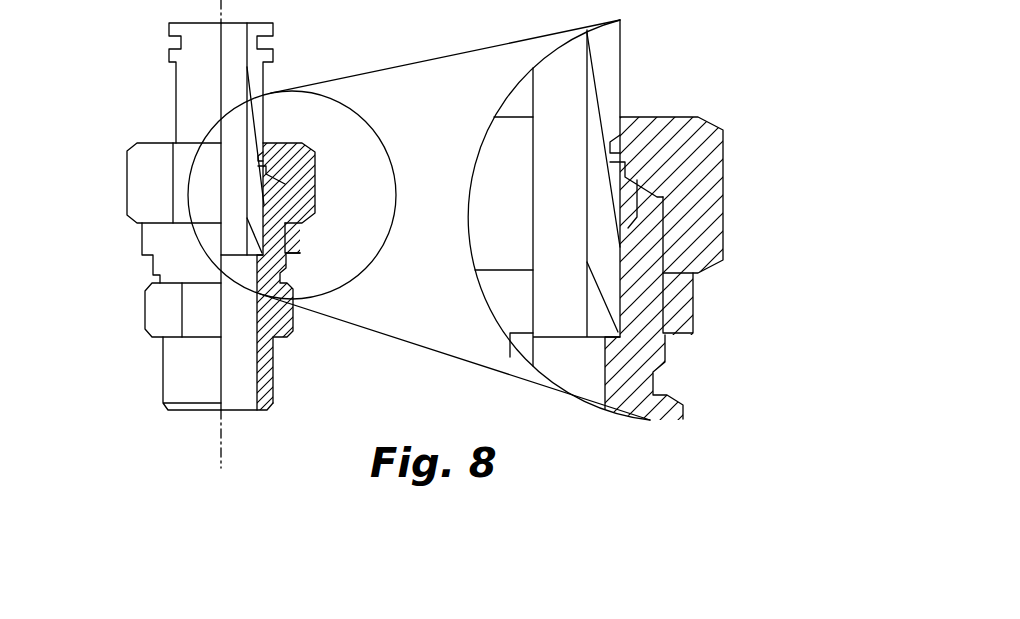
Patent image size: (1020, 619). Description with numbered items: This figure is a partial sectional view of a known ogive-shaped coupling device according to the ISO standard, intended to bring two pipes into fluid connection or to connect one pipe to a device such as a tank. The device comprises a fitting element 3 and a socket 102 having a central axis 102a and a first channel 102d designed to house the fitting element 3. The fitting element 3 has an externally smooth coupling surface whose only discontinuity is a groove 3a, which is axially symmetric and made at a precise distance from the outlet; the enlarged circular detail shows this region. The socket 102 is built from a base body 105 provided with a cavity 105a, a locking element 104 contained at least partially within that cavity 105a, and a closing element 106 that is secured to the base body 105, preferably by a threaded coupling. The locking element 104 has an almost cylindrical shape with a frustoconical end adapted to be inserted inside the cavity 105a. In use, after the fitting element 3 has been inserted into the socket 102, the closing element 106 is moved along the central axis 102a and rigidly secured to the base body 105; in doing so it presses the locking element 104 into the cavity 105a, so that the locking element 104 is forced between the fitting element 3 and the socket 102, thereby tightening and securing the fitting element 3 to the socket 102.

The fitting element 3 is at (158, 98).
The groove 3a is at (642, 134).
The locking element 104 is at (623, 233).
The base body 105 is at (163, 313).
The cavity 105a is at (668, 298).
The closing element 106 is at (150, 187).
The socket 102 is at (153, 420).
The central axis 102a is at (222, 453).
The first channel 102d is at (240, 382).